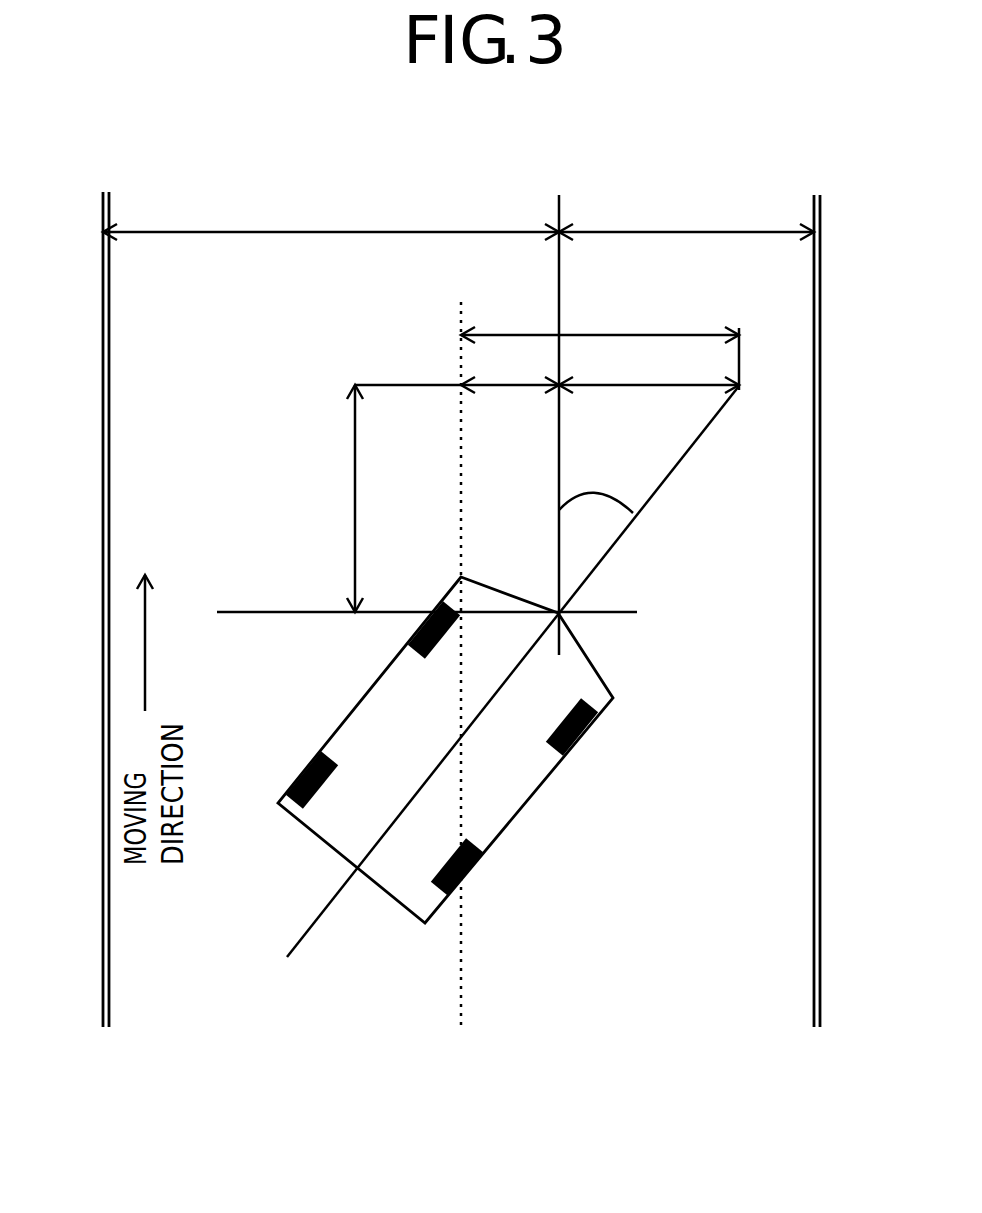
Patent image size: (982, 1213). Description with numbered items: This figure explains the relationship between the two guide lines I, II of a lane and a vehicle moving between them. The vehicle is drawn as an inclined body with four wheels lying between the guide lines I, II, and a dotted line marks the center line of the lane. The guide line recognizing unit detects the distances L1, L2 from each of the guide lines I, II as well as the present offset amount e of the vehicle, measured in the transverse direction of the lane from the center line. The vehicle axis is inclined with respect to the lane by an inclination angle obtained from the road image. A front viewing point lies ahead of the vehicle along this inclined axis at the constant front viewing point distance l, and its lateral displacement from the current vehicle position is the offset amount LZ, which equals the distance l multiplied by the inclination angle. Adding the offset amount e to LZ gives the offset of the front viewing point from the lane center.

The guide line I is at (822, 447).
The guide line II is at (103, 453).
The distance from guide line L1 is at (686, 210).
The distance from guide line L2 is at (331, 207).
The offset amount of vehicle e is at (457, 367).
The offset amount of front viewing point from vehicle position LZ is at (649, 371).
The front viewing point distance l is at (339, 498).